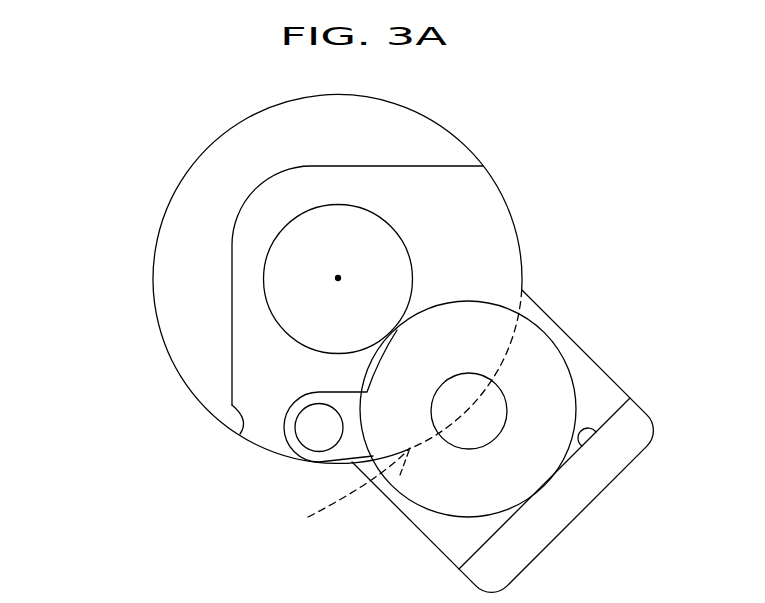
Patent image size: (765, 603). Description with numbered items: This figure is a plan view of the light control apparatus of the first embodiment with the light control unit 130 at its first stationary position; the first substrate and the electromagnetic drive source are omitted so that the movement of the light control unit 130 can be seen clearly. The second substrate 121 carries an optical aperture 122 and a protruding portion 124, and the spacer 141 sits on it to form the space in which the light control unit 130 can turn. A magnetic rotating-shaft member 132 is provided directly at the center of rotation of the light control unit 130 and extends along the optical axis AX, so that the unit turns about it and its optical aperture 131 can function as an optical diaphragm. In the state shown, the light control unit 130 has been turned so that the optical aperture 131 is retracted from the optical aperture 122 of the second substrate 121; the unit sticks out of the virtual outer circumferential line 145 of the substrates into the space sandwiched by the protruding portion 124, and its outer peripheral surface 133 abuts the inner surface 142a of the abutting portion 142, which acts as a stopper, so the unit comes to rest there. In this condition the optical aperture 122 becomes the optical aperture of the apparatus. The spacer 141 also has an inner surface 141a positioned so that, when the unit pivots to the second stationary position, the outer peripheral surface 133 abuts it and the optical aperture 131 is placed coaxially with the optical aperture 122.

The second substrate 121 is at (485, 240).
The optical aperture 122 is at (390, 307).
The protruding portion 124 is at (417, 517).
The light control unit 130 is at (545, 333).
The optical aperture 131 is at (465, 443).
The rotating-shaft member 132 is at (318, 428).
The outer peripheral surface 133 is at (473, 518).
The spacer 141 is at (190, 268).
The inner surface 141a is at (240, 434).
The abutting portion 142 is at (553, 517).
The inner surface 142a is at (605, 440).
The virtual outer circumferential line 145 is at (309, 516).
The optical axis AX is at (338, 278).